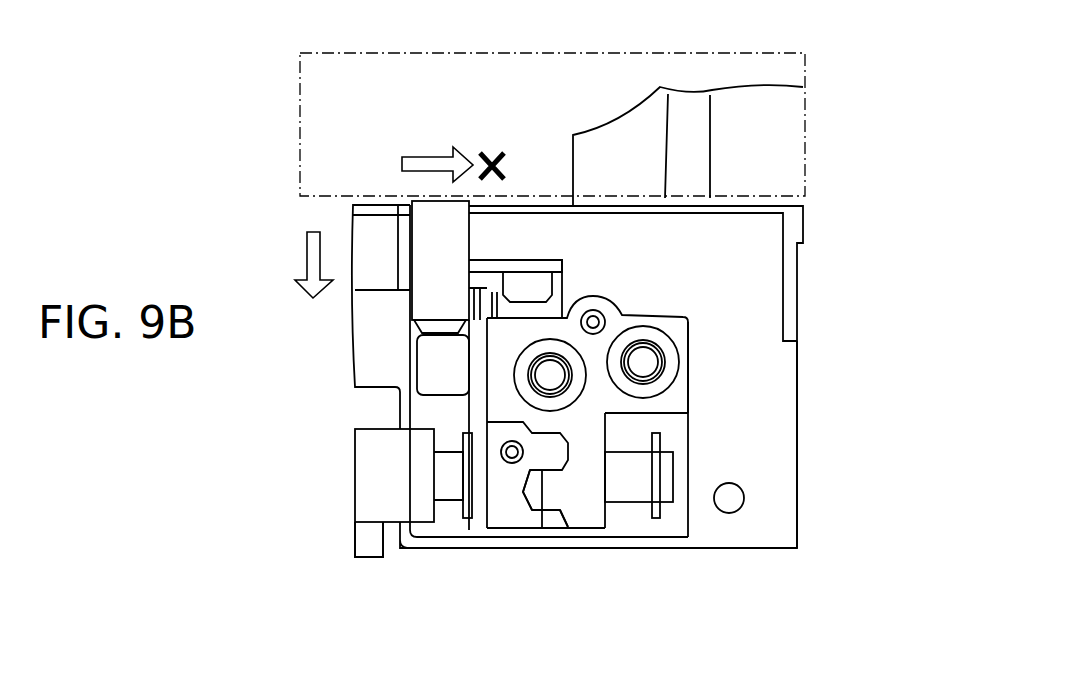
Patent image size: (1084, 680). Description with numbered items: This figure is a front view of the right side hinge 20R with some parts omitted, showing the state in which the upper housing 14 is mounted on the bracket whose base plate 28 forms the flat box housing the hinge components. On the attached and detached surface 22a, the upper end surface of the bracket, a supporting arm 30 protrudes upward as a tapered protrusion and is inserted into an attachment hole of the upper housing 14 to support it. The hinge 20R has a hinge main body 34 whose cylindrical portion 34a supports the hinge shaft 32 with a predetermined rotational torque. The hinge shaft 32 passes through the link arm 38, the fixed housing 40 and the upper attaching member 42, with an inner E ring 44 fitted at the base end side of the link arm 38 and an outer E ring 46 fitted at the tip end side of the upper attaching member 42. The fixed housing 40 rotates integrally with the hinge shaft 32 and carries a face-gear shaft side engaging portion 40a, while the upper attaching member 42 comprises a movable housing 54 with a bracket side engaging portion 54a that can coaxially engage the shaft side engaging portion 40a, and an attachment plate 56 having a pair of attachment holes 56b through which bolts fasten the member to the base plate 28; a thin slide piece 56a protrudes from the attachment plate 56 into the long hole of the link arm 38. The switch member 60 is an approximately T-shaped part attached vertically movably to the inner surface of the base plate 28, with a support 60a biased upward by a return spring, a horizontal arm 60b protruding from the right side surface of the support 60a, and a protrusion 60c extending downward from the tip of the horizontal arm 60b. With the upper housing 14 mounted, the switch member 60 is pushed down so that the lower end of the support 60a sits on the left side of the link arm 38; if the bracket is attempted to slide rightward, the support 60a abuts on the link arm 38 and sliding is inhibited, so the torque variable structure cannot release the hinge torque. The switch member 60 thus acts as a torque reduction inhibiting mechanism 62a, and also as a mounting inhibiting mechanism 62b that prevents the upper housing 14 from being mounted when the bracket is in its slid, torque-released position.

The upper housing 14 is at (691, 52).
The supporting arm 30 is at (762, 100).
The torque reduction inhibiting mechanism 62a is at (470, 100).
The mounting inhibiting mechanism 62b is at (492, 166).
The attached and detached surface 22a is at (372, 205).
The switch member 60 is at (424, 209).
The support 60a is at (430, 233).
The horizontal arm 60b is at (537, 267).
The protrusion 60c is at (518, 283).
The link arm 38 is at (478, 318).
The slide piece 56a is at (443, 367).
The attachment plate 56 is at (677, 325).
The attachment holes 56b is at (637, 358).
The upper attaching member 42 is at (673, 408).
The cylindrical portion 34a is at (370, 477).
The hinge main body 34 is at (369, 539).
The inner E ring 44 is at (462, 450).
The hinge 20R is at (413, 567).
The fixed housing 40 is at (508, 512).
The shaft side engaging portion 40a is at (541, 505).
The movable housing 54 is at (587, 514).
The bracket side engaging portion 54a is at (553, 512).
The hinge shaft 32 is at (627, 492).
The outer E ring 46 is at (662, 504).
The base plate 28 is at (737, 536).